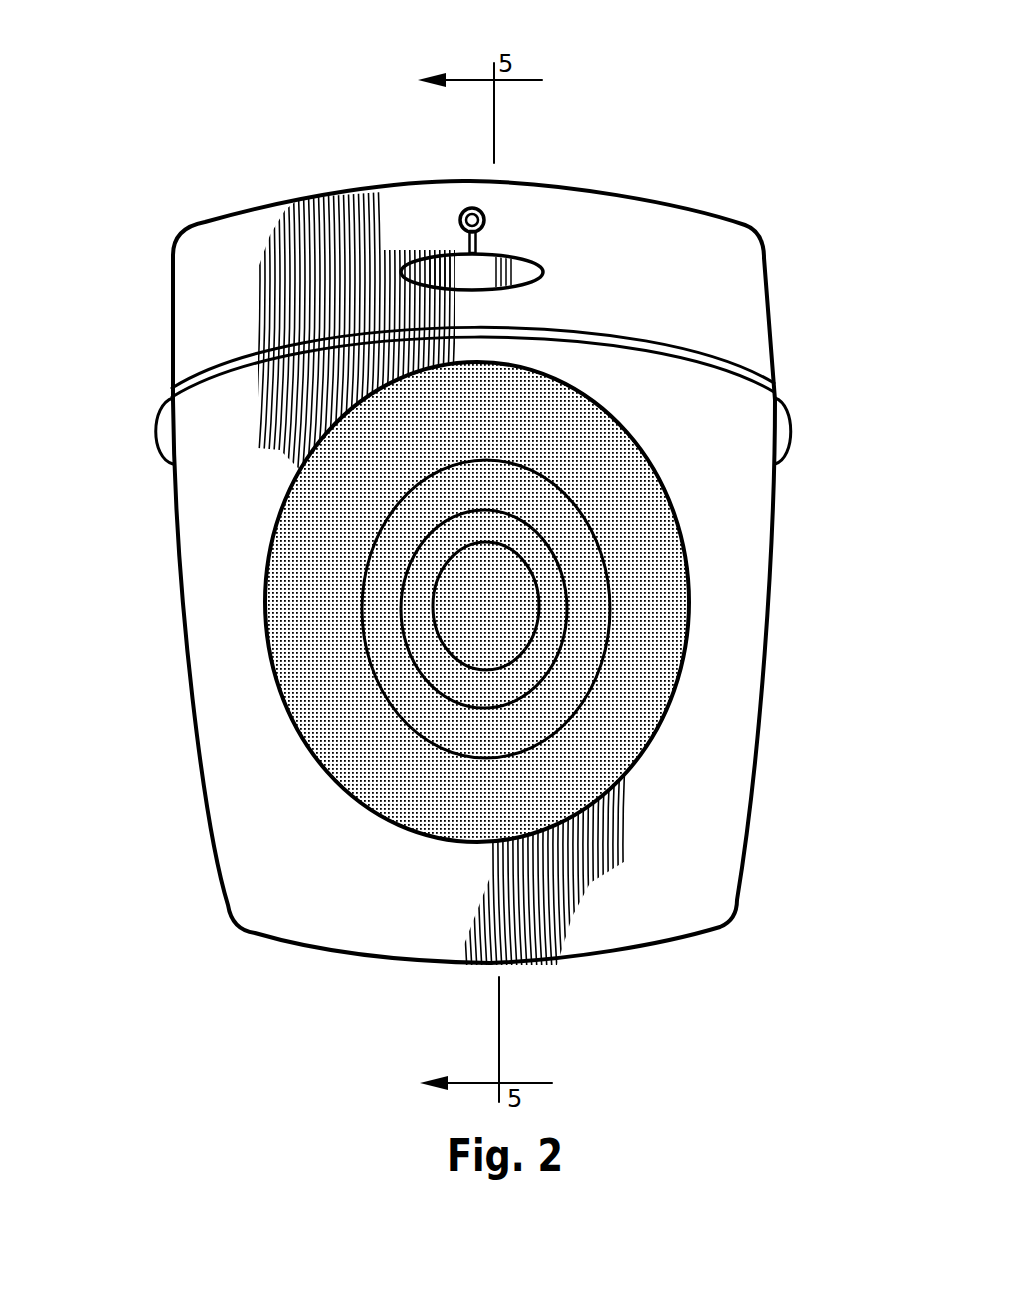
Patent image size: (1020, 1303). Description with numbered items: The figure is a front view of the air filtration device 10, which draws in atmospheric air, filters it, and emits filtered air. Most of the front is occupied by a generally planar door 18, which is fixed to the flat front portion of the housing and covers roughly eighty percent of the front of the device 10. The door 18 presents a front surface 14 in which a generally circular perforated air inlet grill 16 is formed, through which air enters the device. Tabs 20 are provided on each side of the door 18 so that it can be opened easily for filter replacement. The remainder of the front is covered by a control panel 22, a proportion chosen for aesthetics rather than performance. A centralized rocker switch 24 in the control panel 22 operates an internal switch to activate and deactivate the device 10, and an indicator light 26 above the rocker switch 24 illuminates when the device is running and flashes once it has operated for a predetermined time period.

The air filtration device 10 is at (592, 100).
The front surface 14 is at (175, 813).
The perforated air inlet grill 16 is at (655, 648).
The door 18 is at (723, 815).
The tabs 20 is at (780, 420).
The control panel 22 is at (755, 303).
The rocker switch 24 is at (437, 250).
The indicator light 26 is at (487, 225).